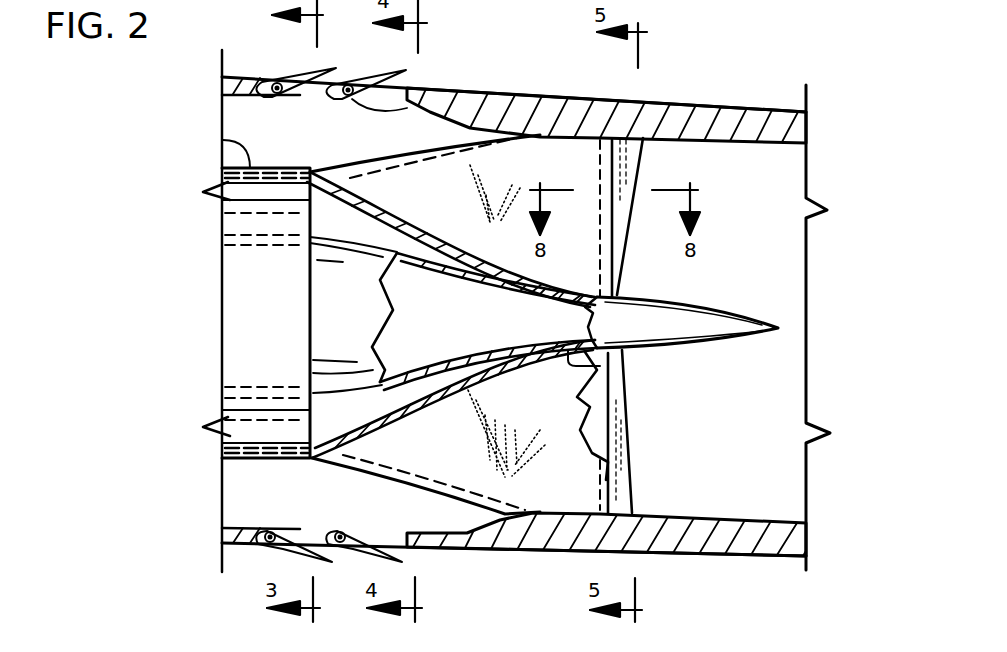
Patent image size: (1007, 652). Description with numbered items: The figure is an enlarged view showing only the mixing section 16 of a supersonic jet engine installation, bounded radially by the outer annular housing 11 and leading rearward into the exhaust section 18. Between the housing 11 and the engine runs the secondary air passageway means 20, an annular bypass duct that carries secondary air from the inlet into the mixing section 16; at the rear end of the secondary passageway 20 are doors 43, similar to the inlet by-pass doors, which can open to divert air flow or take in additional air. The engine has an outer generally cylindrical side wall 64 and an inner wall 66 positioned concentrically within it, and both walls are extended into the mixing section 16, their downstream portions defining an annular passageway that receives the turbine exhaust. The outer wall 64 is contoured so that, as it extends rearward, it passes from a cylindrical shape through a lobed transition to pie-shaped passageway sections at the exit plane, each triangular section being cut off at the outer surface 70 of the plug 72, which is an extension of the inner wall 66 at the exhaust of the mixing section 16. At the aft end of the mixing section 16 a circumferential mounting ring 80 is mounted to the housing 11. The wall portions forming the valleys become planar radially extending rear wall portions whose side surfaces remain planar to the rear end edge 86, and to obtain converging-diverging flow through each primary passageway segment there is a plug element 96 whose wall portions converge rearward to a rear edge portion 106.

The outer annular housing 11 is at (254, 76).
The mixing section 16 is at (433, 127).
The exhaust section 18 is at (753, 100).
The secondary air passageway means 20 is at (240, 106).
The doors 43 is at (305, 95).
The outer generally cylindrical side wall 64 is at (223, 140).
The inner wall 66 is at (268, 235).
The outer surface 70 is at (572, 351).
The plug 72 is at (707, 308).
The circumferential mounting ring 80 is at (592, 118).
The rear end edge 86 is at (610, 477).
The plug element 96 is at (613, 390).
The rear edge portion 106 is at (627, 417).